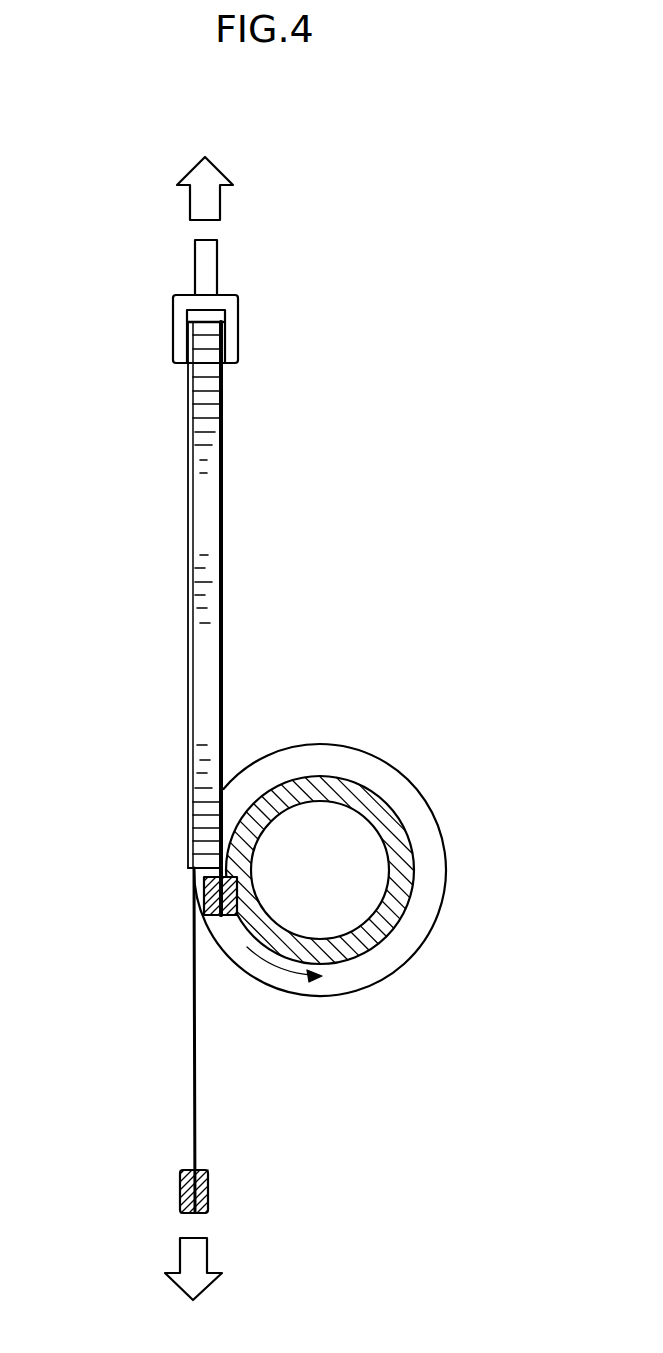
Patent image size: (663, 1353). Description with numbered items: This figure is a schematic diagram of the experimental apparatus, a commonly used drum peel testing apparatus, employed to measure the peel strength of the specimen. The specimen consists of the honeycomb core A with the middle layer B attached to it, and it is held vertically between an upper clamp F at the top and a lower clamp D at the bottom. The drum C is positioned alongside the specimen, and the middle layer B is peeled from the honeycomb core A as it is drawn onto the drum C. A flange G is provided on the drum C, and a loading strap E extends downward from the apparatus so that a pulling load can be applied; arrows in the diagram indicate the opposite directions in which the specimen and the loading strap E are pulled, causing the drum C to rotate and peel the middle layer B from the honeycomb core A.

The honeycomb core A is at (203, 507).
The middle layer B is at (224, 558).
The drum C is at (358, 805).
The lower clamp D is at (222, 925).
The loading strap E is at (193, 1105).
The upper clamp F is at (240, 292).
The flange G is at (403, 952).